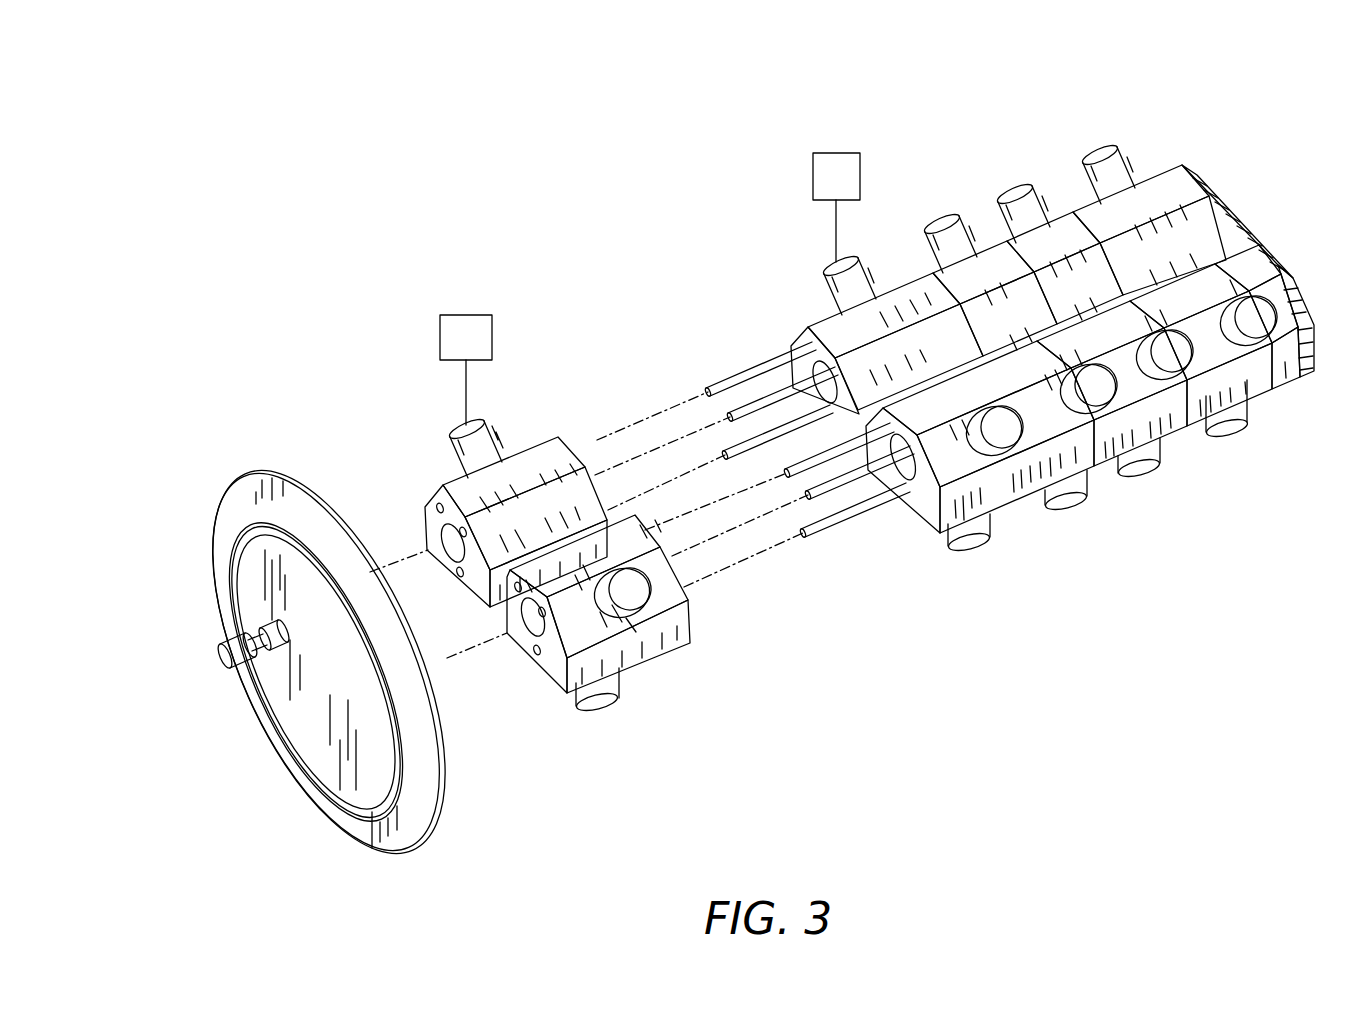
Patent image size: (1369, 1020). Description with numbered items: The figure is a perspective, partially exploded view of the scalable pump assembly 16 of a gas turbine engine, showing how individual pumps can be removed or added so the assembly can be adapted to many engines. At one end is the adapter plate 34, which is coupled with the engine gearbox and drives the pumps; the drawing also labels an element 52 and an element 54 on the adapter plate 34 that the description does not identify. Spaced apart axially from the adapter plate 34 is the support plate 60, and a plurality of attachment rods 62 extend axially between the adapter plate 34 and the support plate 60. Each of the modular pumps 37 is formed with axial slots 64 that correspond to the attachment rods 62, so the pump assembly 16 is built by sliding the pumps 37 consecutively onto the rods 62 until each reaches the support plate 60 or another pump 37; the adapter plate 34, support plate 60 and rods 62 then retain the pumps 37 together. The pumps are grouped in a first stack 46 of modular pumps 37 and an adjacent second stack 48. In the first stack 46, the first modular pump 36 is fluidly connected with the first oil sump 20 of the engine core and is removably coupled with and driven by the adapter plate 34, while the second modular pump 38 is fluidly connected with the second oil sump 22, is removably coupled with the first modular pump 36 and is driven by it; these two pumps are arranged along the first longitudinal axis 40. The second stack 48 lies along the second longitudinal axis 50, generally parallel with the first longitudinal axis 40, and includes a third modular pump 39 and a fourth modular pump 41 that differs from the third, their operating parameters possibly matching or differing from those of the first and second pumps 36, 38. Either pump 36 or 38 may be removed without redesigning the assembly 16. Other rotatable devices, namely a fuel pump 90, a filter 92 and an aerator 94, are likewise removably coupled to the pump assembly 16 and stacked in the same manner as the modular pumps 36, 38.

The scalable pump assembly 16 is at (1060, 296).
The first oil sump 20 is at (438, 338).
The second oil sump 22 is at (812, 176).
The adapter plate 34 is at (315, 630).
The first modular pump 36 is at (499, 476).
The modular pumps 37 is at (1008, 254).
The second modular pump 38 is at (904, 274).
The third modular pump 39 is at (668, 633).
The first longitudinal axis 40 is at (388, 563).
The fourth modular pump 41 is at (1003, 483).
The first stack 46 is at (1211, 175).
The second stack 48 is at (1292, 287).
The second longitudinal axis 50 is at (452, 653).
The rim 52 is at (230, 520).
The knob 54 is at (216, 626).
The support plate 60 is at (1255, 236).
The attachment rods 62 is at (753, 347).
The axial slots 64 is at (443, 485).
The fuel pump 90 is at (982, 235).
The filter 92 is at (1150, 163).
The aerator 94 is at (1064, 193).